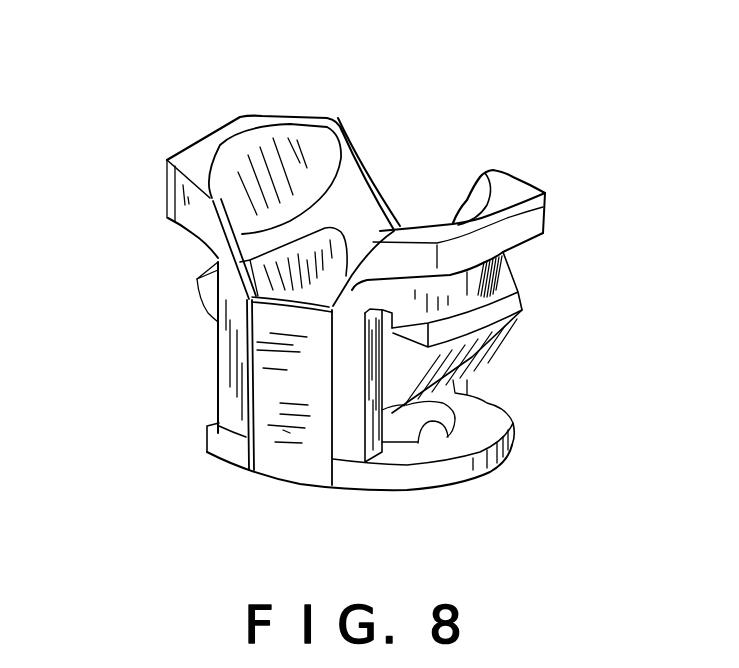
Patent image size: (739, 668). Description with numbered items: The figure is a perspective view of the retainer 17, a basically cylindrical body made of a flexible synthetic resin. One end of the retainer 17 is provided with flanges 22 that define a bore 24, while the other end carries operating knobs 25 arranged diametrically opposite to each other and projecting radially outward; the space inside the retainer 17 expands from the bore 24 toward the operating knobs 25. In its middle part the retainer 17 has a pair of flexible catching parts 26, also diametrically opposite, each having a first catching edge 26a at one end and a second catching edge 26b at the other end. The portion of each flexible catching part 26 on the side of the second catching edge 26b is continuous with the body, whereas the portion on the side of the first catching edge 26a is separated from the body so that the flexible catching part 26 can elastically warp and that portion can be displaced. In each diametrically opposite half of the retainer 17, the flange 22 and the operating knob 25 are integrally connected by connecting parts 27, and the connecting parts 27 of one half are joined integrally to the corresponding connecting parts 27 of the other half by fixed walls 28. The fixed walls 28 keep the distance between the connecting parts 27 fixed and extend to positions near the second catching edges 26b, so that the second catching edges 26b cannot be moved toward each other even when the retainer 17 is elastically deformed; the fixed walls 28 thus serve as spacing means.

The retainer 17 is at (467, 128).
The flange 22 is at (215, 423).
The bore 24 is at (448, 438).
The operating knob 25 is at (219, 133).
The flexible catching part 26 is at (217, 304).
The first catching edge 26a is at (411, 421).
The second catching edge 26b is at (218, 262).
The connecting part 27 is at (238, 363).
The fixed wall 28 is at (286, 437).